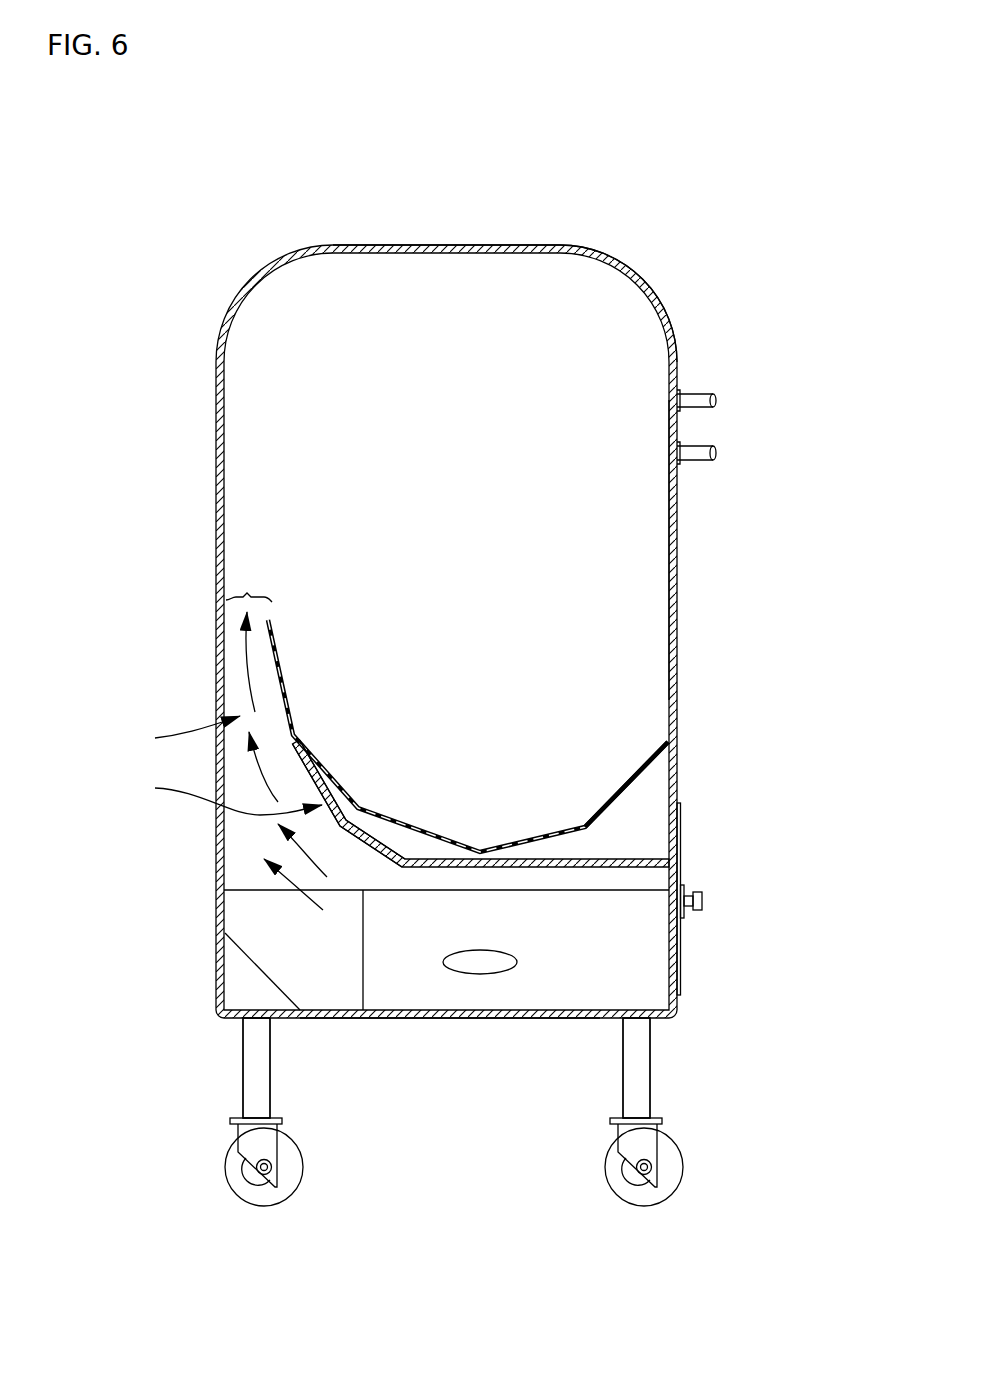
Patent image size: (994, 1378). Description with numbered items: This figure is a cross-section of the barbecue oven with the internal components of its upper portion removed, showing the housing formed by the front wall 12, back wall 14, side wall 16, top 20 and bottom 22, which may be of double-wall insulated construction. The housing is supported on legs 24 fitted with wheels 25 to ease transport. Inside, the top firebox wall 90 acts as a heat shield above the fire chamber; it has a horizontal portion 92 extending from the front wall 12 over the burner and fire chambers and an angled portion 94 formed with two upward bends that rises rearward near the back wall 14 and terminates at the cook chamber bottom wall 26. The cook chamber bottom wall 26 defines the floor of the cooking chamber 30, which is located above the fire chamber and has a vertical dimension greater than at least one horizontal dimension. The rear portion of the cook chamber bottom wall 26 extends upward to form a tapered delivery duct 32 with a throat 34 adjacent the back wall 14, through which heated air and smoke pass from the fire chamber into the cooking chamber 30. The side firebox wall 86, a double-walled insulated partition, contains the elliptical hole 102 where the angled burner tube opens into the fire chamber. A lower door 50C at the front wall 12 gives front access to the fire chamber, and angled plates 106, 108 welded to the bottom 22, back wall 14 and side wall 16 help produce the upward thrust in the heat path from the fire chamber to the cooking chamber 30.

The front wall 12 is at (677, 763).
The back wall 14 is at (218, 695).
The side wall 16 is at (617, 330).
The top 20 is at (448, 245).
The bottom 22 is at (410, 1020).
The legs 24 is at (256, 1078).
The wheels 25 is at (263, 1200).
The cook chamber bottom wall 26 is at (638, 766).
The cooking chamber 30 is at (585, 633).
The delivery duct 32 is at (176, 735).
The throat 34 is at (237, 598).
The lower door 50C is at (680, 872).
The side firebox wall 86 is at (610, 960).
The top firebox wall 90 is at (217, 795).
The horizontal portion 92 is at (480, 864).
The angled portion 94 is at (345, 830).
The hole 102 is at (493, 958).
The angled plate 106 is at (243, 950).
The angled plate 108 is at (318, 968).